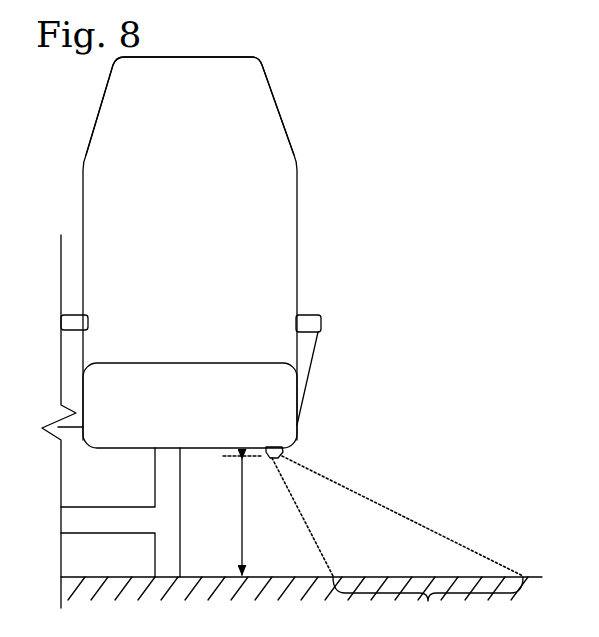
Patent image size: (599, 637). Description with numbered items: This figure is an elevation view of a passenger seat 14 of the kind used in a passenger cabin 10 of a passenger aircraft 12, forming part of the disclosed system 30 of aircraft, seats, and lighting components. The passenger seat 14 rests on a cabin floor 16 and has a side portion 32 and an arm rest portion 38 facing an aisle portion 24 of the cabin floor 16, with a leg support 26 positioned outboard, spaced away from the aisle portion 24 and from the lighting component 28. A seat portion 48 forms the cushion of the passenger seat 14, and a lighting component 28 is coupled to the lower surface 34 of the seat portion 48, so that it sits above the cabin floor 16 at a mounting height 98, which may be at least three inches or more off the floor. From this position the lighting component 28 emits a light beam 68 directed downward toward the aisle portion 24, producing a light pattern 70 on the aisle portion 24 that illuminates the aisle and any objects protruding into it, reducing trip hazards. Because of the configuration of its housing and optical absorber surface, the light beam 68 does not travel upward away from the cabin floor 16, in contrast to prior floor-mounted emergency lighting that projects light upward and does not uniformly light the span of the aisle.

The passenger cabin 10 is at (454, 174).
The passenger aircraft 12 is at (496, 121).
The passenger seat 14 is at (196, 118).
The cabin floor 16 is at (128, 574).
The aisle portion 24 is at (378, 546).
The leg support 26 is at (150, 520).
The lighting component 28 is at (288, 469).
The system 30 is at (534, 62).
The side portion 32 is at (297, 208).
The lower surface 34 is at (120, 449).
The arm rest portion 38 is at (307, 323).
The seat portion 48 is at (178, 363).
The light beam 68 is at (437, 530).
The light pattern 70 is at (428, 605).
The mounting height 98 is at (242, 487).